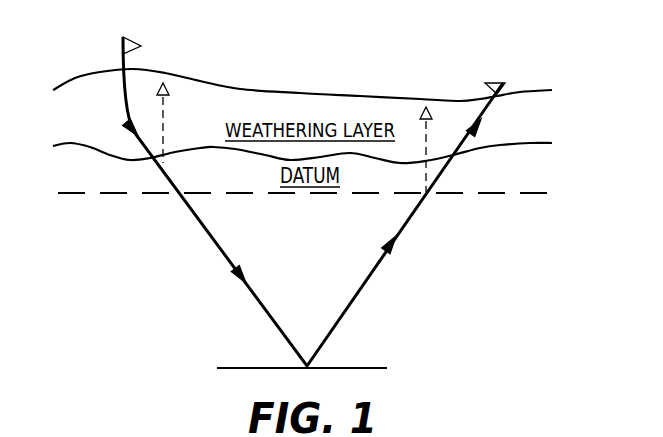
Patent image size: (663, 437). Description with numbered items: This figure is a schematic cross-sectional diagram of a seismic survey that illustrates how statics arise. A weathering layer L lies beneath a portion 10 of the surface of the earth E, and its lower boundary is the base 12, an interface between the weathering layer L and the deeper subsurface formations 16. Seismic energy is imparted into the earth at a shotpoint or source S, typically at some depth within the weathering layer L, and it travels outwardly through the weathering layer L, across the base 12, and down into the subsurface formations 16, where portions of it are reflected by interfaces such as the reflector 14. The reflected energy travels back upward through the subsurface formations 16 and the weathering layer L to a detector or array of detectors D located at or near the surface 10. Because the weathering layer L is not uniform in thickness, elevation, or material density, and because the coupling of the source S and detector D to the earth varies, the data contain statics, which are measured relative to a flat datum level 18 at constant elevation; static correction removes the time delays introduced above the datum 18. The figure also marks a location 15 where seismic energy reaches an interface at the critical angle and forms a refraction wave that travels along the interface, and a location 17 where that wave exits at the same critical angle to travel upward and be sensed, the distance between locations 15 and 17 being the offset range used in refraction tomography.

The portion of the earth's surface 10 is at (318, 96).
The base of the weathering layer 12 is at (91, 148).
The reflector interface 14 is at (359, 368).
The critical-angle refraction entry location 15 is at (163, 110).
The subsurface geologic formations 16 is at (318, 273).
The refraction exit location 17 is at (427, 137).
The datum level 18 is at (485, 194).
The shotpoint S is at (121, 45).
The detector D is at (505, 90).
The weathering layer L is at (262, 110).
The earth E is at (400, 47).